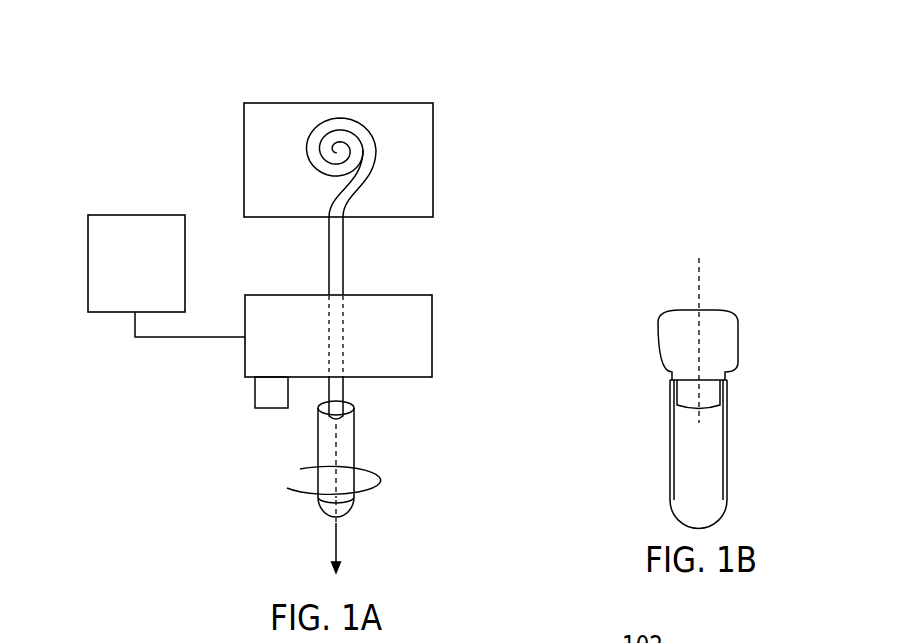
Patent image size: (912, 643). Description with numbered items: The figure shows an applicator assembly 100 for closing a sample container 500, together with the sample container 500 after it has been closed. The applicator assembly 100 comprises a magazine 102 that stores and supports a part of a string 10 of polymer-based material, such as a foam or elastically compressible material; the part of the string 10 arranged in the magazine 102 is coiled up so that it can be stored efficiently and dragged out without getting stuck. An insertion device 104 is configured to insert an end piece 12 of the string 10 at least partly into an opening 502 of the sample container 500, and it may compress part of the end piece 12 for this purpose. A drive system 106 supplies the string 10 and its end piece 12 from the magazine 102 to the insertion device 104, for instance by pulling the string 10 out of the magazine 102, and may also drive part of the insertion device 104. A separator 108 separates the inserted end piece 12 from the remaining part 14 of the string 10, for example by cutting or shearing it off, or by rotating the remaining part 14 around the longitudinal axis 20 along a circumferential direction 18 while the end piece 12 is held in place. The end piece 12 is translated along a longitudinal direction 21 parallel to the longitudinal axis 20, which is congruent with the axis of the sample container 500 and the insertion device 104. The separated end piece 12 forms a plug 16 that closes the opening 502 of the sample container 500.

In FIG. 1A, the applicator assembly 100 is at (530, 172).
In FIG. 1A, the magazine 102 is at (438, 92).
In FIG. 1A, the insertion device 104 is at (435, 349).
In FIG. 1A, the drive system 106 is at (118, 213).
In FIG. 1A, the separator 108 is at (253, 388).
In FIG. 1A, the remaining part of the string 14 is at (350, 232).
In FIG. 1A, the string 10 is at (347, 276).
In FIG. 1A, the end piece 12 is at (318, 397).
In FIG. 1B, the plug 16 is at (712, 306).
In FIG. 1A, the longitudinal axis 20 is at (322, 465).
In FIG. 1B, the longitudinal axis 20 is at (699, 289).
In FIG. 1A, the opening 502 is at (357, 404).
In FIG. 1B, the opening 502 is at (728, 376).
In FIG. 1A, the sample container 500 is at (360, 444).
In FIG. 1B, the sample container 500 is at (729, 437).
In FIG. 1A, the circumferential direction 18 is at (362, 471).
In FIG. 1A, the longitudinal direction 21 is at (337, 550).